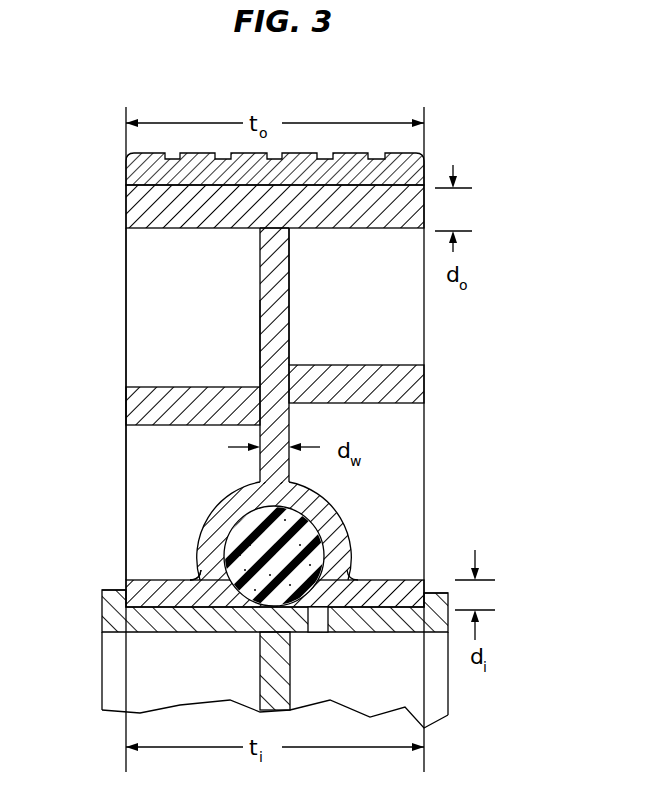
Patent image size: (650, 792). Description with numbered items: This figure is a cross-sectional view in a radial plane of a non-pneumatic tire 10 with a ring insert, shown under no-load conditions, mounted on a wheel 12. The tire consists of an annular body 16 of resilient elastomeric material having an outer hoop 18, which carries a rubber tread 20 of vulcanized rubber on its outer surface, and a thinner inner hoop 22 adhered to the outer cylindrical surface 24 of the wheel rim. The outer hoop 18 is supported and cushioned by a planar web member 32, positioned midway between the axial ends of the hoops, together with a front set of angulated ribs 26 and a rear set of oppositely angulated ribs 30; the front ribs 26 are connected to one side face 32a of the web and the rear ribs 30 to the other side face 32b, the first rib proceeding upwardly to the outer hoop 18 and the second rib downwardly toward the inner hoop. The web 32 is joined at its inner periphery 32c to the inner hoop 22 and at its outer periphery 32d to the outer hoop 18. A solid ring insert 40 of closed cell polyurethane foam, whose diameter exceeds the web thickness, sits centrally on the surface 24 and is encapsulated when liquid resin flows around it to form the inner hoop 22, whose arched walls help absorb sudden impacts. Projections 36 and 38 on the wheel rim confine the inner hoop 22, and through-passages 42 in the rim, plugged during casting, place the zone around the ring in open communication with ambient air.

The non-pneumatic tire 10 is at (456, 156).
The wheel 12 is at (470, 703).
The annular body 16 is at (118, 314).
The outer hoop 18 is at (126, 207).
The rubber tread 20 is at (126, 172).
The inner hoop 22 is at (150, 578).
The outer cylindrical surface 24 is at (150, 622).
The front set of angulated ribs 26 is at (126, 406).
The rear set of oppositely angulated ribs 30 is at (400, 365).
The web member 32 is at (262, 295).
The side face of web 32a is at (260, 345).
The other side face of web 32b is at (289, 300).
The inner periphery of web 32c is at (182, 569).
The outer periphery of web 32d is at (260, 237).
The projection 36 is at (120, 590).
The projection 38 is at (436, 592).
The ring insert 40 is at (340, 515).
The through-passages 42 is at (320, 630).